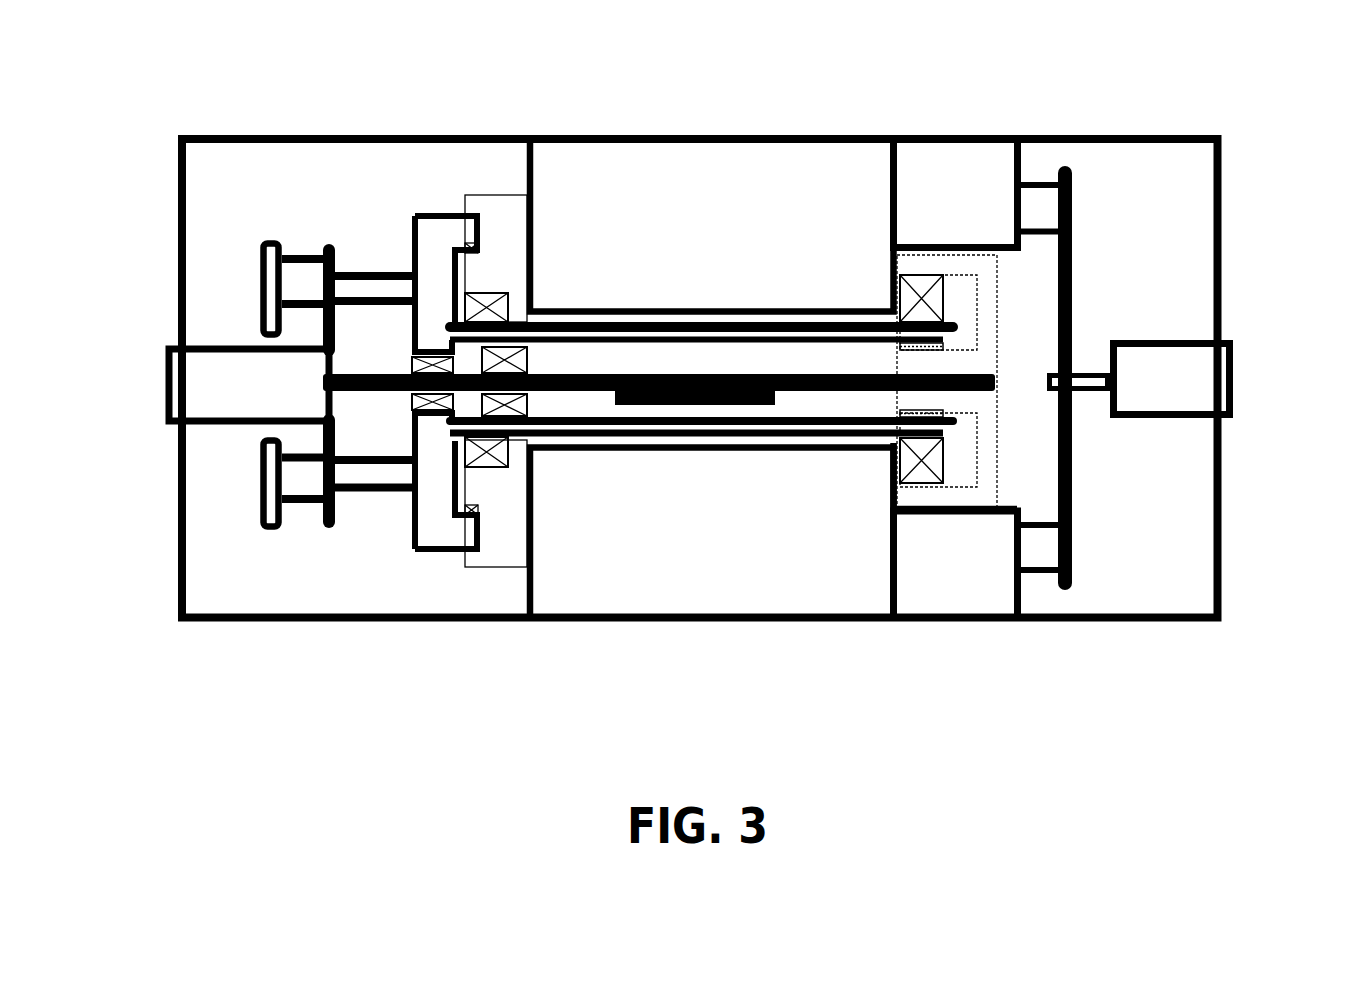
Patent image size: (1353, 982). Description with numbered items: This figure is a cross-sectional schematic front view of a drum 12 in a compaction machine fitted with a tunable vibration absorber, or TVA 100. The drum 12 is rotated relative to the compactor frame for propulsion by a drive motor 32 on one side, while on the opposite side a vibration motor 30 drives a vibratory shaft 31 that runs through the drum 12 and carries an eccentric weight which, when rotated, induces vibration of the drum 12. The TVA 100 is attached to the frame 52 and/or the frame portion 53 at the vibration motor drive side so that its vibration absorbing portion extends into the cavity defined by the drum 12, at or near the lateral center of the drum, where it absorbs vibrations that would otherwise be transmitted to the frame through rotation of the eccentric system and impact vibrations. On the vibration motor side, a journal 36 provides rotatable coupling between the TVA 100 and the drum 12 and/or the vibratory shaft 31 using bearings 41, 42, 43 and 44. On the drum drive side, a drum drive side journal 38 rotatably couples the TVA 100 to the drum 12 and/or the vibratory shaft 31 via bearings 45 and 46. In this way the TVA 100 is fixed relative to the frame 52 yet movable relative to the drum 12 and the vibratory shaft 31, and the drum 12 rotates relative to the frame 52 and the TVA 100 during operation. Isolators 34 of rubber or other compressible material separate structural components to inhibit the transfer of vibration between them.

The drum 12 is at (462, 137).
The vibration motor 30 is at (223, 392).
The vibratory shaft 31 is at (647, 373).
The drive motor 32 is at (1183, 375).
The isolators 34 is at (272, 276).
The vibration motor side journal 36 is at (462, 200).
The drum drive side journal 38 is at (912, 252).
The bearing 41 is at (478, 250).
The bearing 42 is at (495, 293).
The bearing 43 is at (465, 437).
The bearing 44 is at (448, 394).
The bearing 45 is at (898, 400).
The bearing 46 is at (925, 305).
The frame 52 is at (297, 270).
The frame portion 53 is at (390, 477).
The tunable vibration absorber (TVA) 100 is at (420, 225).